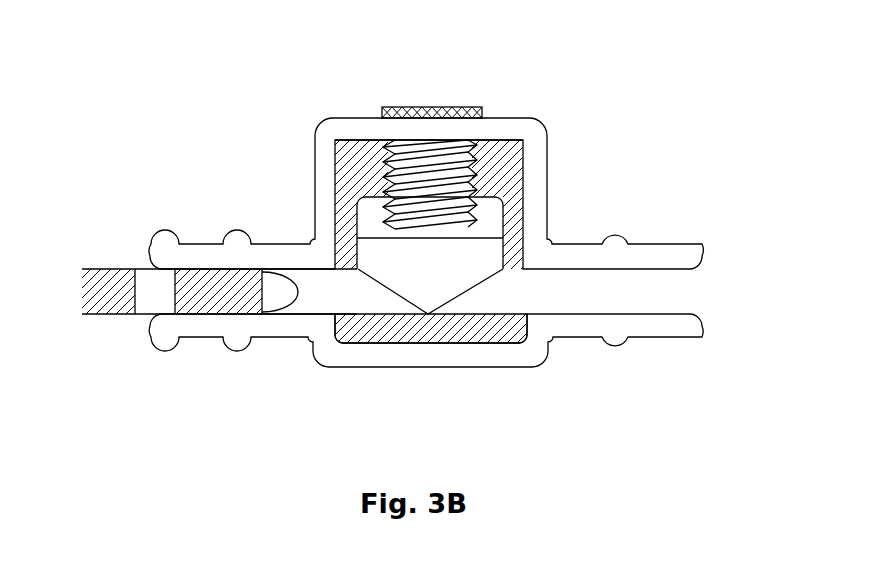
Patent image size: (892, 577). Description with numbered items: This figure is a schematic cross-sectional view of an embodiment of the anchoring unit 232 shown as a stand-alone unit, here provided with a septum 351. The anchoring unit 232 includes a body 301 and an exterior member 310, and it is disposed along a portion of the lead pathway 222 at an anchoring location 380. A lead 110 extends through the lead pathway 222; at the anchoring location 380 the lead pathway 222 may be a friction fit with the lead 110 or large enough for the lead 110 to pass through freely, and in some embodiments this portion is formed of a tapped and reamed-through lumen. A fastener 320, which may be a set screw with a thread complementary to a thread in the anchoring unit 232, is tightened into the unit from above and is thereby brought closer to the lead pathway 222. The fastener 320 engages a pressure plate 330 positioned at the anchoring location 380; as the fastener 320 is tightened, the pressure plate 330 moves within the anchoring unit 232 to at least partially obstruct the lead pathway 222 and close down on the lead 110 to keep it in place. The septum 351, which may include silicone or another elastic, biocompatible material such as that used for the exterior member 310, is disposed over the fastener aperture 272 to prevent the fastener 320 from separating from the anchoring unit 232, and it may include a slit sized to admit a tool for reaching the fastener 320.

The lead 110 is at (113, 292).
The lead pathway 222 is at (686, 290).
The anchoring unit 232 is at (467, 403).
The fastener aperture 272 is at (430, 92).
The body 301 is at (500, 174).
The exterior member 310 is at (333, 143).
The fastener 320 is at (463, 147).
The pressure plate 330 is at (410, 283).
The septum 351 is at (453, 108).
The anchoring location 380 is at (492, 299).